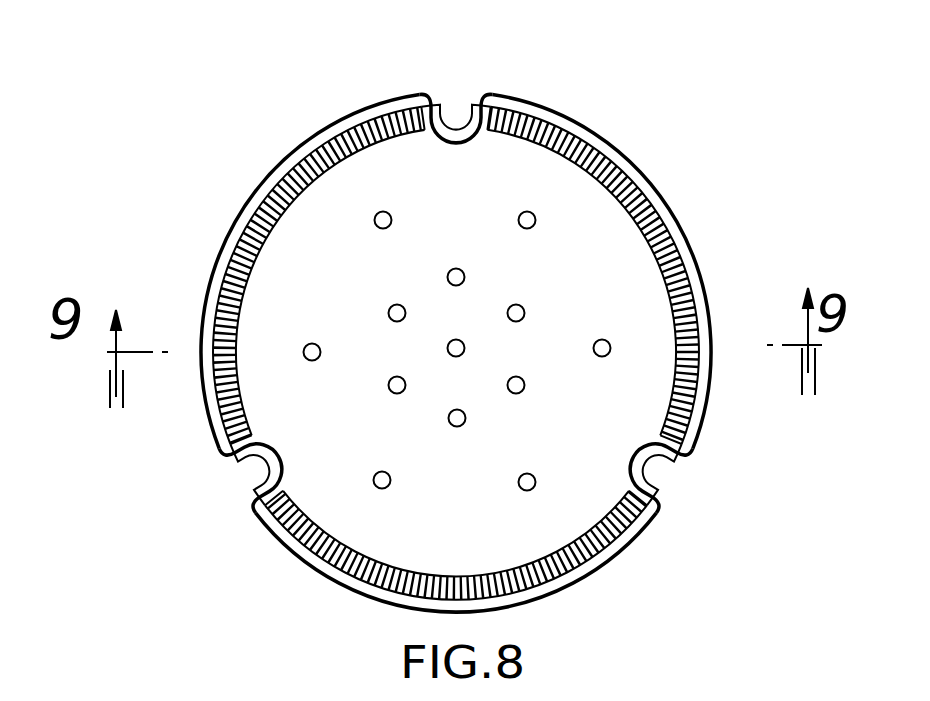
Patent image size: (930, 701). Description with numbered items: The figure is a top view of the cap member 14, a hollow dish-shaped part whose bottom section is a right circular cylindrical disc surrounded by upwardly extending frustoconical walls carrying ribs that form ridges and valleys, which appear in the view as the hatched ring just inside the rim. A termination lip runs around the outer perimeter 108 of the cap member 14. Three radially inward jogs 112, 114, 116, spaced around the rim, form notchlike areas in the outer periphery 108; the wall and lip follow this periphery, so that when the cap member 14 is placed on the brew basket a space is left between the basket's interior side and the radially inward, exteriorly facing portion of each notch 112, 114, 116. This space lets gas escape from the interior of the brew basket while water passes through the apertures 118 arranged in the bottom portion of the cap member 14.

The cap member 14 is at (648, 523).
The outer perimeter 108 is at (327, 583).
The radially inward jog 112 is at (270, 458).
The radially inward jog 114 is at (455, 130).
The radially inward jog 116 is at (640, 458).
The apertures 118 is at (522, 307).